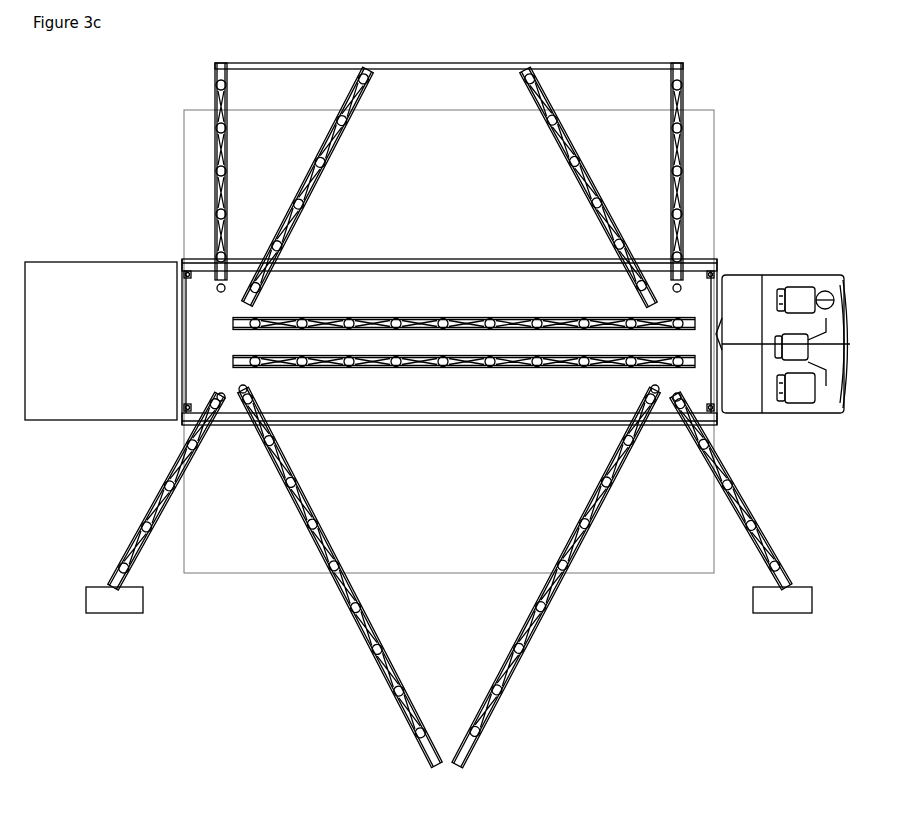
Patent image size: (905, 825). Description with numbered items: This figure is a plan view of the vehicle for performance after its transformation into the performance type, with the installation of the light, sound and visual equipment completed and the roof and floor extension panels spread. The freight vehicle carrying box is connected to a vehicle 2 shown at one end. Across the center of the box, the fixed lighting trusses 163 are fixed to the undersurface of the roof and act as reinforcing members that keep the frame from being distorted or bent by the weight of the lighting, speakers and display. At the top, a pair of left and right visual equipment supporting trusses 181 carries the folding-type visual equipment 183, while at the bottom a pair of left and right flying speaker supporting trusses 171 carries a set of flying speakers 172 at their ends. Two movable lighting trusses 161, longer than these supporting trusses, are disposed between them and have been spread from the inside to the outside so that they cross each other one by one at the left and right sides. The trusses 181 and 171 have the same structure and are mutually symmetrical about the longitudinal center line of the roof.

The vehicle 2 is at (808, 275).
The movable lighting truss 161 is at (556, 138).
The fixed lighting truss 163 is at (224, 322).
The flying speaker supporting truss 171 is at (140, 553).
The flying speaker 172 is at (105, 605).
The visual equipment supporting truss 181 is at (212, 95).
The folding-type visual equipment 183 is at (473, 68).